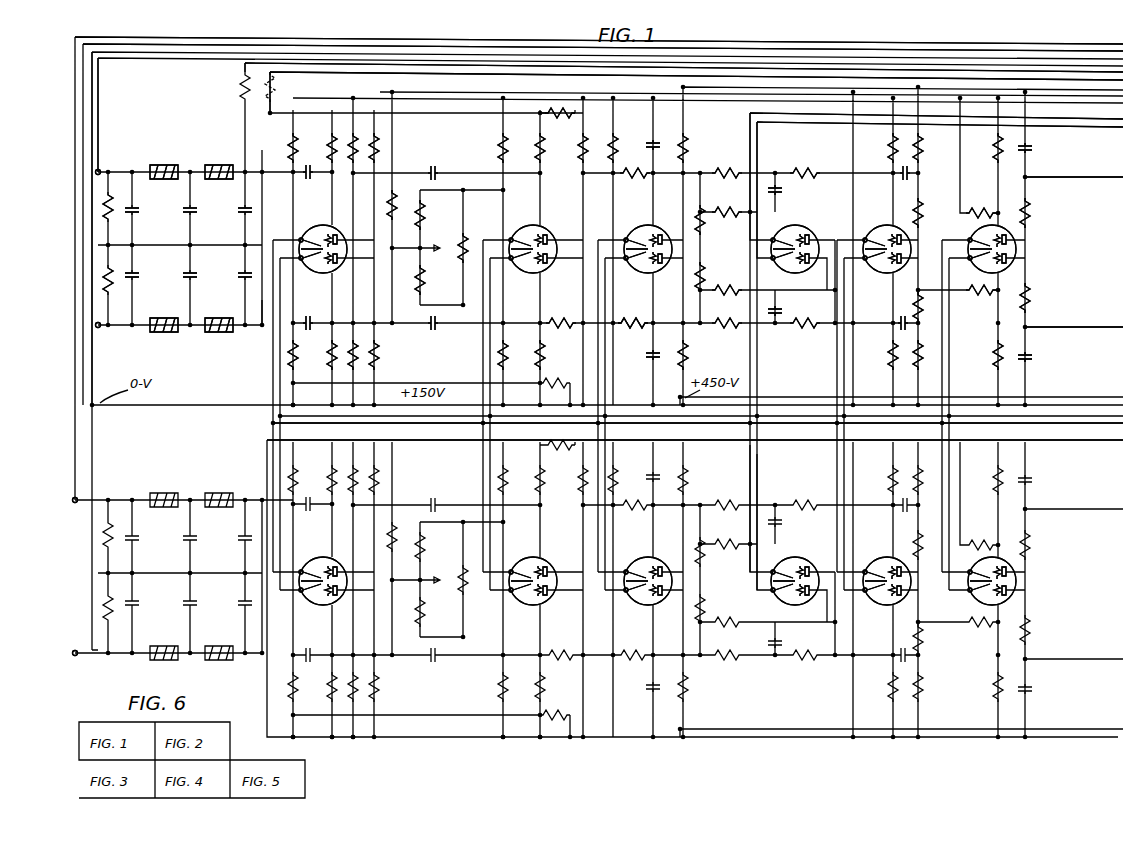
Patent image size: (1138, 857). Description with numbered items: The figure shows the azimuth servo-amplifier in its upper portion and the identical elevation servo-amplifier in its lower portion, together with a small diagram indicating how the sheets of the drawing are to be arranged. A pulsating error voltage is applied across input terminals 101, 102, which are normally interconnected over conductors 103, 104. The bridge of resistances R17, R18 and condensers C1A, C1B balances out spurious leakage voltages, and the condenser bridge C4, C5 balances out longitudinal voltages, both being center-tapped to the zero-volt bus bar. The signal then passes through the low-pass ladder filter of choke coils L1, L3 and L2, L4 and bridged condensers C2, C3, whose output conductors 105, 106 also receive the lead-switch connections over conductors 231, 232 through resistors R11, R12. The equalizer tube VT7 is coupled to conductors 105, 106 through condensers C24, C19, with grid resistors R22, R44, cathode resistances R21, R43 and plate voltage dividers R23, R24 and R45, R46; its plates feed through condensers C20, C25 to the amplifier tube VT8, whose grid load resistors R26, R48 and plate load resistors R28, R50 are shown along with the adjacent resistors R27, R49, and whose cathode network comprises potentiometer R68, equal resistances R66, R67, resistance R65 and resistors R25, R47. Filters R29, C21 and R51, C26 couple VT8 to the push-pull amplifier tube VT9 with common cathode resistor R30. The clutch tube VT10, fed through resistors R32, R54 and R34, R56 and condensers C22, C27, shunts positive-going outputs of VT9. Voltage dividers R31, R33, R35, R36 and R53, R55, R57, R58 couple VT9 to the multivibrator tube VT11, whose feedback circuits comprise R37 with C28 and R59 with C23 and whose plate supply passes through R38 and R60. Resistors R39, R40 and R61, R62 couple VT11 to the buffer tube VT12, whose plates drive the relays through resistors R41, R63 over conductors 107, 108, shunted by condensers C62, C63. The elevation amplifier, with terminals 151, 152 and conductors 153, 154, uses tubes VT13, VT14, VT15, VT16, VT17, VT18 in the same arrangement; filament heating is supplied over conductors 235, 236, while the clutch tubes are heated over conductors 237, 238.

The input terminal 101 is at (100, 170).
The input terminal 102 is at (100, 330).
The conductor 103 is at (100, 60).
The conductor 104 is at (140, 60).
The output conductor 105 is at (262, 170).
The output conductor 106 is at (262, 330).
The conductor 107 is at (1084, 172).
The conductor 108 is at (1063, 328).
The input terminal 151 is at (80, 498).
The input terminal 152 is at (76, 656).
The conductor 153 is at (236, 46).
The conductor 154 is at (190, 44).
The conductor 231 is at (290, 62).
The conductor 232 is at (360, 72).
The conductor 235 is at (1045, 425).
The conductor 236 is at (1060, 442).
The conductor 237 is at (752, 118).
The conductor 238 is at (760, 125).
The choke coil L1 is at (168, 165).
The choke coil L2 is at (164, 334).
The choke coil L3 is at (222, 165).
The choke coil L4 is at (219, 334).
The resistor R11 is at (243, 88).
The resistor R12 is at (275, 86).
The resistance R17 is at (112, 208).
The resistance R18 is at (112, 280).
The resistance R21 is at (290, 142).
The resistor R22 is at (330, 142).
The resistor R23 is at (357, 145).
The resistor R24 is at (378, 156).
The resistor R25 is at (501, 148).
The resistor R26 is at (560, 110).
The resistor R27 is at (538, 160).
The resistor R28 is at (581, 160).
The resistor R29 is at (636, 178).
The cathode resistor R30 is at (615, 140).
The resistor R31 is at (686, 150).
The resistor R32 is at (727, 217).
The resistor R33 is at (735, 163).
The resistor R34 is at (703, 222).
The resistor R35 is at (808, 170).
The resistor R36 is at (893, 145).
The resistor R37 is at (915, 213).
The resistance R38 is at (921, 150).
The resistor R39 is at (980, 210).
The resistor R40 is at (997, 145).
The resistor R41 is at (1030, 212).
The resistance R43 is at (291, 355).
The resistor R44 is at (330, 355).
The resistor R45 is at (357, 350).
The resistor R46 is at (378, 360).
The resistor R47 is at (501, 355).
The resistor R48 is at (542, 358).
The resistor R49 is at (548, 325).
The resistor R50 is at (620, 326).
The resistor R51 is at (633, 326).
The resistor R53 is at (686, 358).
The resistor R54 is at (703, 275).
The resistor R55 is at (725, 326).
The resistor R56 is at (727, 293).
The resistor R57 is at (805, 326).
The resistor R58 is at (891, 358).
The resistor R59 is at (915, 306).
The resistance R60 is at (920, 358).
The resistor R61 is at (980, 294).
The resistor R62 is at (996, 358).
The resistor R63 is at (1030, 297).
The resistance R65 is at (390, 200).
The resistance R66 is at (421, 218).
The resistance R67 is at (461, 252).
The potentiometer R68 is at (422, 280).
The condenser C1A is at (135, 212).
The condenser C1B is at (143, 282).
The condenser C2 is at (198, 222).
The condenser C3 is at (198, 283).
The condenser C4 is at (243, 208).
The condenser C5 is at (243, 275).
The condenser C19 is at (310, 320).
The condenser C20 is at (438, 170).
The condenser C21 is at (657, 145).
The condenser C22 is at (782, 190).
The condenser C23 is at (910, 175).
The condenser C24 is at (308, 178).
The condenser C25 is at (430, 322).
The condenser C26 is at (651, 357).
The condenser C27 is at (782, 310).
The condenser C28 is at (900, 328).
The condenser C62 is at (1032, 148).
The condenser C63 is at (1030, 360).
The twin triode equalizer tube VT7 is at (348, 254).
The dual triode amplifier tube VT8 is at (540, 273).
The twin triode amplifier tube VT9 is at (636, 272).
The twin diode clutch tube VT10 is at (796, 273).
The dual multivibrator tube VT11 is at (875, 272).
The dual triode buffer tube VT12 is at (1017, 250).
The tube VT13 is at (348, 585).
The tube VT14 is at (540, 605).
The tube VT15 is at (636, 604).
The tube VT16 is at (796, 605).
The tube VT17 is at (875, 604).
The tube VT18 is at (1017, 582).